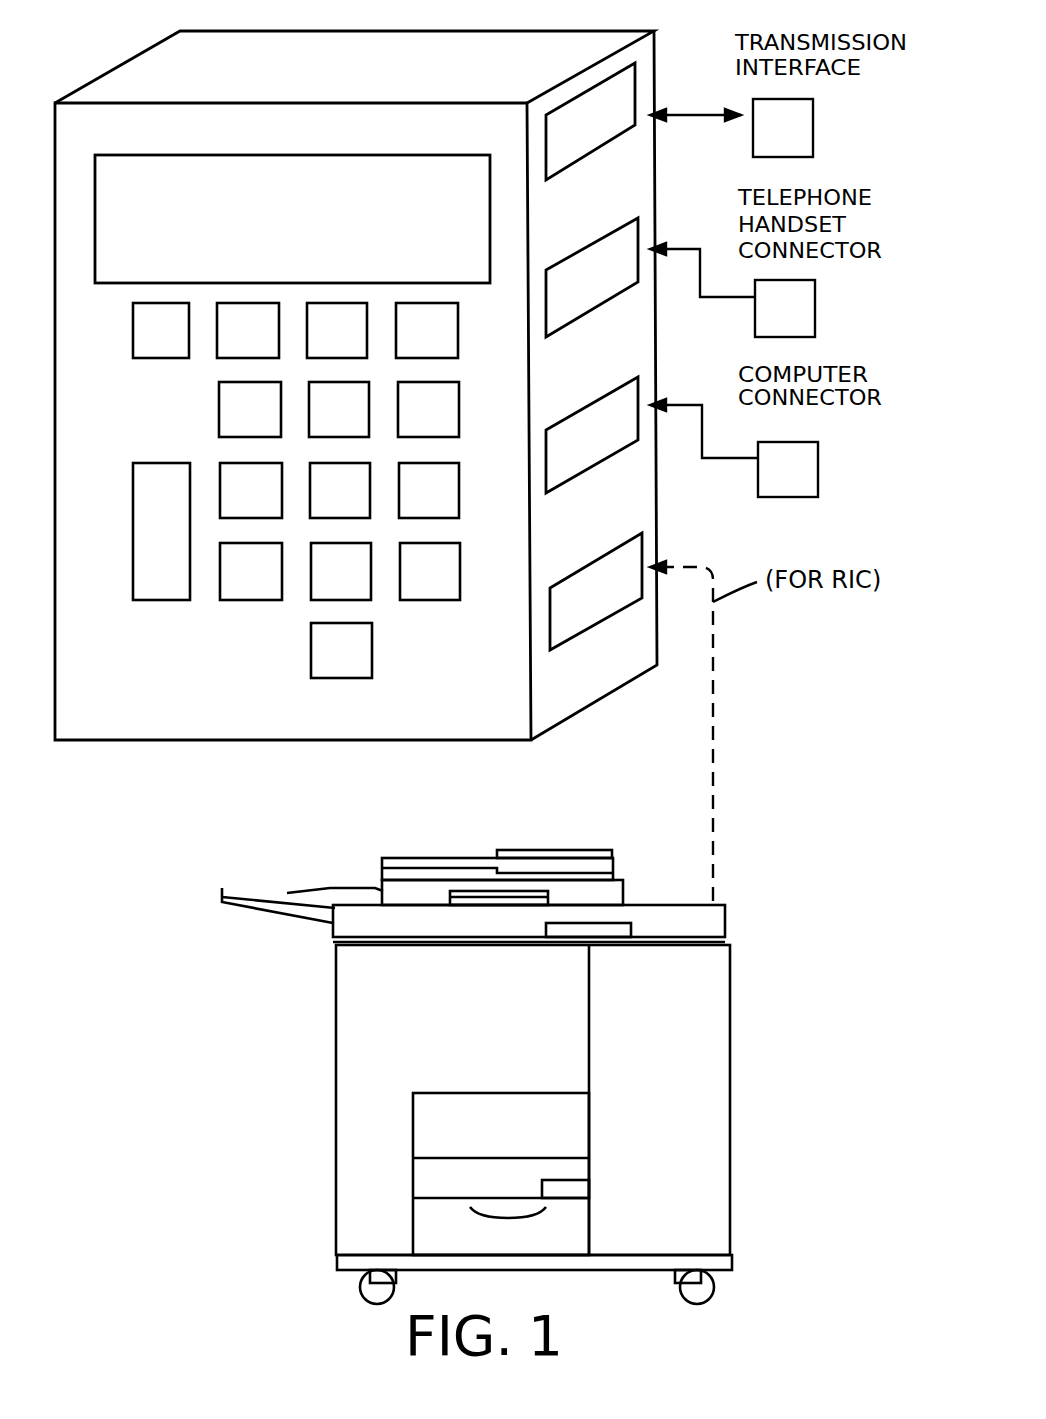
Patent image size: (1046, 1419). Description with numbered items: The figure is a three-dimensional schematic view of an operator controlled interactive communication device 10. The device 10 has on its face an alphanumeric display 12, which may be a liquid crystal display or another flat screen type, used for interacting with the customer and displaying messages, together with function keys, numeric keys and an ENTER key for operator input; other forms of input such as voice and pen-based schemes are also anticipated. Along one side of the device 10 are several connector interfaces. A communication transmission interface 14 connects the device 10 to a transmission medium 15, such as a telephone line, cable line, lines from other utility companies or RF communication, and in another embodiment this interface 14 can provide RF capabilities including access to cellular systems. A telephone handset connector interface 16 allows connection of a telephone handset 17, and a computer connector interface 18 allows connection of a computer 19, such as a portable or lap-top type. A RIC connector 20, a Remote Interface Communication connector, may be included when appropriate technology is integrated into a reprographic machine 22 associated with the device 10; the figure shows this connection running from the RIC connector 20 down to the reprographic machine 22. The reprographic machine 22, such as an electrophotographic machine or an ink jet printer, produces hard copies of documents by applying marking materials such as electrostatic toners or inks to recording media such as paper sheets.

The operator controlled interactive communication device 10 is at (137, 55).
The alphanumeric display 12 is at (140, 155).
The communication transmission interface 14 is at (630, 90).
The transmission medium 15 is at (813, 124).
The telephone handset connector interface 16 is at (627, 238).
The telephone handset 17 is at (815, 303).
The computer connector interface 18 is at (633, 400).
The computer 19 is at (818, 470).
The RIC connector 20 is at (570, 633).
The reprographic machine 22 is at (334, 1027).